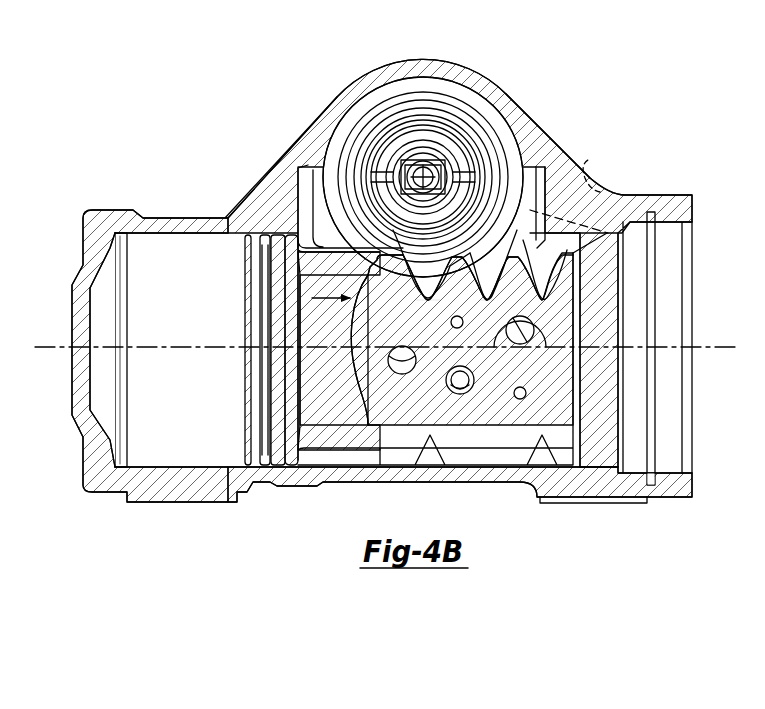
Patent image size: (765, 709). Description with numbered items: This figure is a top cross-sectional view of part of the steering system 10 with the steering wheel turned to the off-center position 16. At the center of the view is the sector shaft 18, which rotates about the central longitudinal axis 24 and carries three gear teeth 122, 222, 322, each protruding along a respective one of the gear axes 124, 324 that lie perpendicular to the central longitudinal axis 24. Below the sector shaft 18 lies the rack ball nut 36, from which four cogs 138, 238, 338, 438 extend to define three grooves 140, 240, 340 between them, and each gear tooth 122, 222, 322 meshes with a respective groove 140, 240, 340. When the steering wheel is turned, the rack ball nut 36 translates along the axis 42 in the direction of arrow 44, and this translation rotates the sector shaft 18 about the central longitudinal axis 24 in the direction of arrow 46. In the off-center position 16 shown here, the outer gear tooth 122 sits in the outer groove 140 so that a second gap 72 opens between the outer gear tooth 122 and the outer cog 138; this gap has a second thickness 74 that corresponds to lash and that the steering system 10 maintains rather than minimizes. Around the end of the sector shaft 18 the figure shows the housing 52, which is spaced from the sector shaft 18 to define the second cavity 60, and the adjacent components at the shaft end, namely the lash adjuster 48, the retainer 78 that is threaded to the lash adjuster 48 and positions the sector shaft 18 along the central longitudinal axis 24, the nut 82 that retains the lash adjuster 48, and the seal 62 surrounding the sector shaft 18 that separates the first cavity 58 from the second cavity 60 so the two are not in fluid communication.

The steering system 10 is at (374, 281).
The off-center position 16 is at (151, 122).
The second cavity 60 is at (393, 281).
The lash adjuster 48 is at (380, 150).
The central longitudinal axis 24 is at (371, 232).
The retainer 78 is at (423, 150).
The first cavity 58 is at (444, 137).
The nut 82 is at (448, 166).
The seal 62 is at (447, 185).
The sector shaft 18 is at (440, 193).
The gear axis 324 is at (588, 158).
The housing 52 is at (641, 192).
The gear tooth 322 is at (507, 222).
The arrow 46 is at (352, 205).
The gear tooth 122 is at (436, 200).
The gear tooth 222 is at (517, 284).
The second thickness 74 is at (419, 286).
The cog 138 is at (418, 282).
The cog 238 is at (468, 279).
The cog 338 is at (539, 307).
The cog 438 is at (556, 300).
The second gap 72 is at (422, 303).
The groove 140 is at (434, 304).
The groove 240 is at (487, 305).
The groove 340 is at (568, 350).
The gear axis 124 is at (455, 395).
The rack ball nut 36 is at (429, 379).
The arrow 44 is at (326, 302).
The axis 42 is at (726, 345).